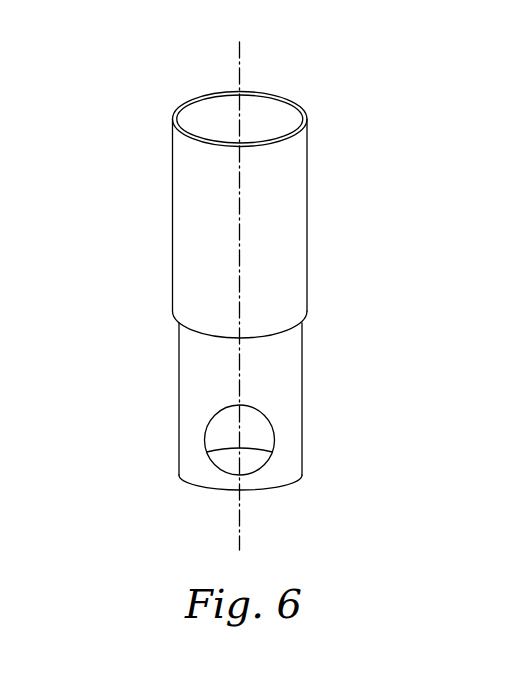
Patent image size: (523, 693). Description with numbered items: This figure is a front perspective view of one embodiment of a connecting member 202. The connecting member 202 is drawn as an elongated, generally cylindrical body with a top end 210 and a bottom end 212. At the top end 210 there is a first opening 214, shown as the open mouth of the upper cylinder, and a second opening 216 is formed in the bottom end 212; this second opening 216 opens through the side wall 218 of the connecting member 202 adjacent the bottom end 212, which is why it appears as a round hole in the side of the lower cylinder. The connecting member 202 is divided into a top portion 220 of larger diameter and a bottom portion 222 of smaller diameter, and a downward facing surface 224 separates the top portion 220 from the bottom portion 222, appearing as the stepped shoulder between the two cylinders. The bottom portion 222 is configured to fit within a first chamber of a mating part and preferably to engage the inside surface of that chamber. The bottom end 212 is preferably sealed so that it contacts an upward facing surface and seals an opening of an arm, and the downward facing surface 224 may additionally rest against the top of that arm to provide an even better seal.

The connecting member 202 is at (345, 162).
The top end 210 is at (298, 100).
The bottom end 212 is at (282, 486).
The first opening 214 is at (276, 108).
The second opening 216 is at (271, 418).
The side wall 218 is at (292, 375).
The top portion 220 is at (172, 205).
The bottom portion 222 is at (192, 382).
The downward facing surface 224 is at (305, 322).